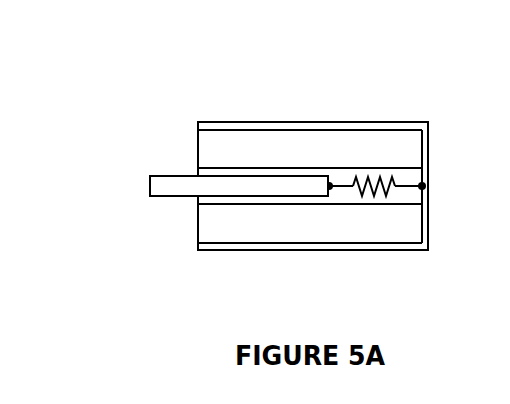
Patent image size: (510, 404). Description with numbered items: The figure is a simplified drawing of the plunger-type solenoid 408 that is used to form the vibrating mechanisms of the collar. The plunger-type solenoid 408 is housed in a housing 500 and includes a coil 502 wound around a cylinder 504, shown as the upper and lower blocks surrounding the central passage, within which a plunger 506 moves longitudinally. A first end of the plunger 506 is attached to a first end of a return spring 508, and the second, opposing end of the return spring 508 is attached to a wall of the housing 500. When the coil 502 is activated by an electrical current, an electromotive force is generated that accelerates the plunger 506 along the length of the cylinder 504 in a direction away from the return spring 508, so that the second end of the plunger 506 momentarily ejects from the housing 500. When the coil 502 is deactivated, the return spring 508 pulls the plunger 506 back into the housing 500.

The plunger-type solenoid 408 is at (110, 95).
The housing 500 is at (393, 130).
The coil 502 is at (223, 148).
The cylinder 504 is at (342, 176).
The plunger 506 is at (149, 200).
The return spring 508 is at (377, 199).